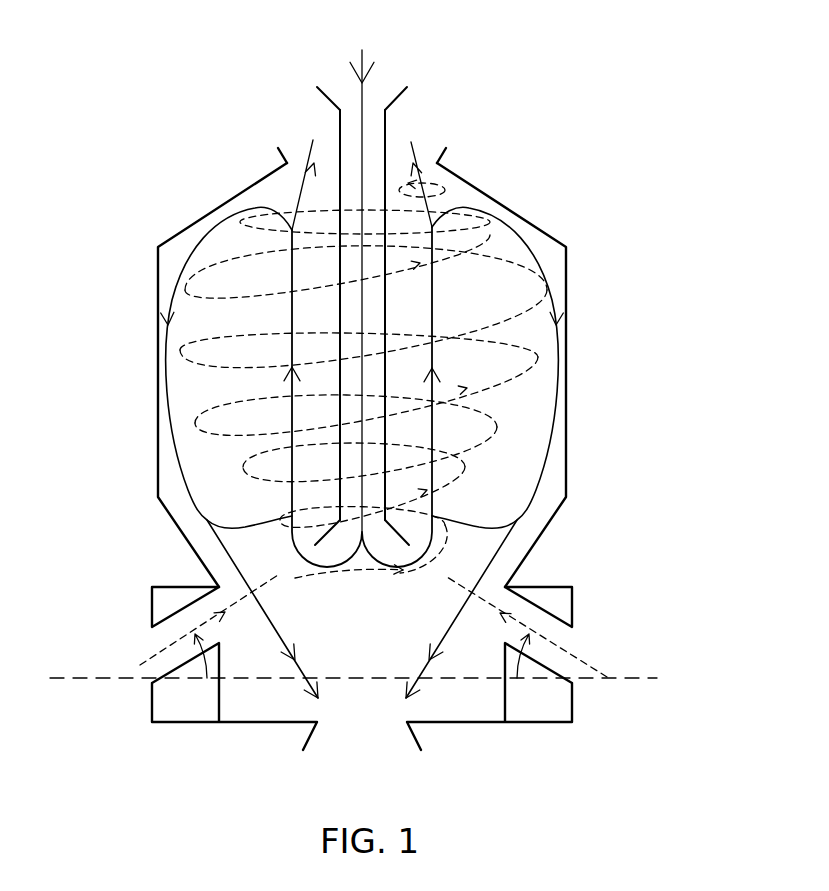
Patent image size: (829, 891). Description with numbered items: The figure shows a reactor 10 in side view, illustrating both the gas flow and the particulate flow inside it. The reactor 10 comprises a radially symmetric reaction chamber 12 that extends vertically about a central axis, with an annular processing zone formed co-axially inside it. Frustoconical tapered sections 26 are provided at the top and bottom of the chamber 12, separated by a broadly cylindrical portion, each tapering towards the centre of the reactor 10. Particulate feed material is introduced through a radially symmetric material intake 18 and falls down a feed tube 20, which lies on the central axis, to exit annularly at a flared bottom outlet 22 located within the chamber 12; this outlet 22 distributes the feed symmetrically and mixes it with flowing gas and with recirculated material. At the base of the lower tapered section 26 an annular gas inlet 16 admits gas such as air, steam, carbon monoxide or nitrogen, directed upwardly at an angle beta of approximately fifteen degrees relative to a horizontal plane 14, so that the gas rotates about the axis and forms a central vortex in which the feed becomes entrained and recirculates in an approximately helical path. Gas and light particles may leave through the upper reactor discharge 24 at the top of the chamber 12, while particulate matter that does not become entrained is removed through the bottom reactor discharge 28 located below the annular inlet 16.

The reactor 10 is at (388, 399).
The reaction chamber 12 is at (157, 352).
The horizontal plane 14 is at (373, 679).
The annular gas inlet 16 is at (580, 633).
The material intake 18 is at (327, 80).
The feed tube 20 is at (388, 290).
The flared bottom outlet 22 is at (403, 522).
The upper reactor discharge 24 is at (450, 140).
The tapered sections 26 is at (513, 200).
The bottom reactor discharge 28 is at (420, 745).